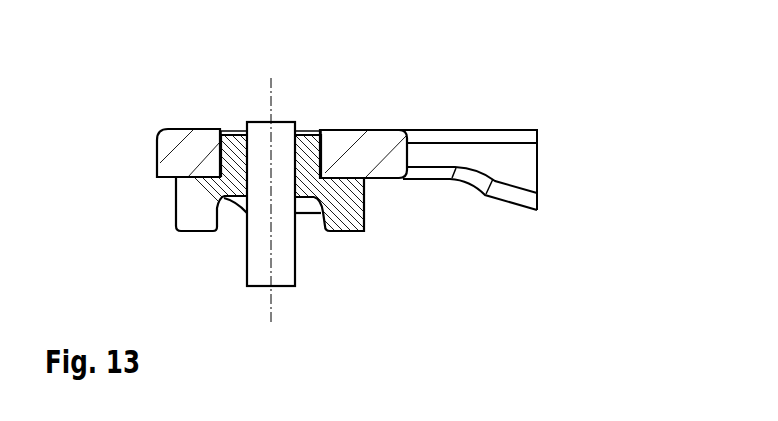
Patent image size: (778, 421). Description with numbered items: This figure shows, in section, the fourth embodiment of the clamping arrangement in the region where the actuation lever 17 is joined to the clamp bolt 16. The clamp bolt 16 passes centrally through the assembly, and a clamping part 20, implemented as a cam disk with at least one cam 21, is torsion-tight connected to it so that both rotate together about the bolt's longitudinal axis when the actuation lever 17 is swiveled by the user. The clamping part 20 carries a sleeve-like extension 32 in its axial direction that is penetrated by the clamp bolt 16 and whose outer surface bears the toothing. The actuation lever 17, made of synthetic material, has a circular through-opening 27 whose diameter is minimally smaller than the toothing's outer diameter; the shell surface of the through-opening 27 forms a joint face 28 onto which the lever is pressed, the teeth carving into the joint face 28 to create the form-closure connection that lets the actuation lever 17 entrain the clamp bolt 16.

The clamp bolt 16 is at (283, 245).
The actuation lever 17 is at (456, 126).
The clamping part 20 is at (367, 197).
The cam 21 is at (192, 218).
The through-opening 27 is at (308, 133).
The joint face 28 is at (230, 131).
The sleeve-like extension 32 is at (333, 131).